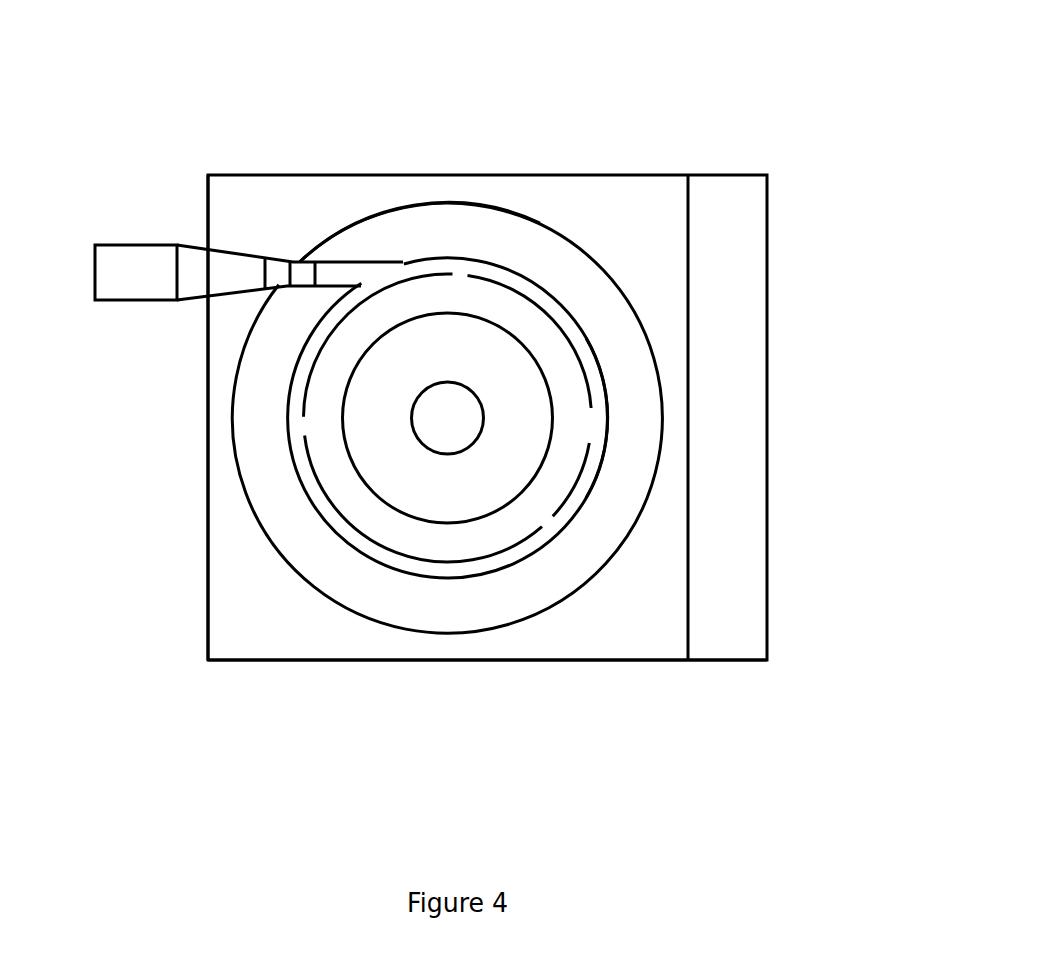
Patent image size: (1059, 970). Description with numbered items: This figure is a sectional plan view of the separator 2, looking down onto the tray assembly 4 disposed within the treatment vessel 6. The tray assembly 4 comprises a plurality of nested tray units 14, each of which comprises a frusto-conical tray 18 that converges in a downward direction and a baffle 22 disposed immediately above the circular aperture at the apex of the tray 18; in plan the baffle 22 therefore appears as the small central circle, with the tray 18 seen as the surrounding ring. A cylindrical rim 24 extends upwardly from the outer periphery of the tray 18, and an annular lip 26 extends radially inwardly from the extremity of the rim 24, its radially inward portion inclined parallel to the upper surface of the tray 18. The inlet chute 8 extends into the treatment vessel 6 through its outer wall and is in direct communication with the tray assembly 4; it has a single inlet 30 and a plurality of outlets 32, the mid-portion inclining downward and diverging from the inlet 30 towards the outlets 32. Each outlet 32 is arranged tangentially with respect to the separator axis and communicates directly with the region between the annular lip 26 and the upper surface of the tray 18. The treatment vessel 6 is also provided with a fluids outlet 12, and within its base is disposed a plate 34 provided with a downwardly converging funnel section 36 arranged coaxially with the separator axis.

The separator 2 is at (740, 135).
The tray assembly 4 is at (612, 611).
The treatment vessel 6 is at (212, 502).
The inlet chute 8 is at (238, 268).
The fluids outlet 12 is at (734, 343).
The tray unit 14 is at (508, 228).
The frusto-conical tray 18 is at (500, 362).
The baffle 22 is at (452, 430).
The cylindrical rim 24 is at (608, 419).
The annular lip 26 is at (325, 393).
The inlet 30 is at (123, 263).
The outlets 32 is at (348, 270).
The plate 34 is at (278, 613).
The funnel section 36 is at (425, 200).